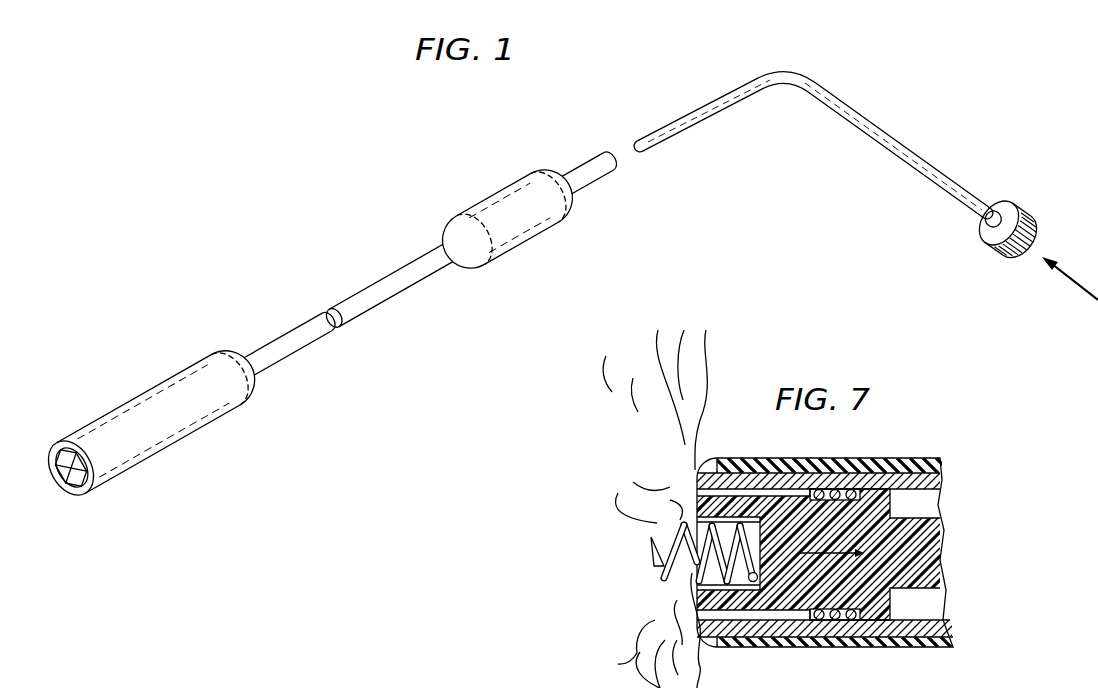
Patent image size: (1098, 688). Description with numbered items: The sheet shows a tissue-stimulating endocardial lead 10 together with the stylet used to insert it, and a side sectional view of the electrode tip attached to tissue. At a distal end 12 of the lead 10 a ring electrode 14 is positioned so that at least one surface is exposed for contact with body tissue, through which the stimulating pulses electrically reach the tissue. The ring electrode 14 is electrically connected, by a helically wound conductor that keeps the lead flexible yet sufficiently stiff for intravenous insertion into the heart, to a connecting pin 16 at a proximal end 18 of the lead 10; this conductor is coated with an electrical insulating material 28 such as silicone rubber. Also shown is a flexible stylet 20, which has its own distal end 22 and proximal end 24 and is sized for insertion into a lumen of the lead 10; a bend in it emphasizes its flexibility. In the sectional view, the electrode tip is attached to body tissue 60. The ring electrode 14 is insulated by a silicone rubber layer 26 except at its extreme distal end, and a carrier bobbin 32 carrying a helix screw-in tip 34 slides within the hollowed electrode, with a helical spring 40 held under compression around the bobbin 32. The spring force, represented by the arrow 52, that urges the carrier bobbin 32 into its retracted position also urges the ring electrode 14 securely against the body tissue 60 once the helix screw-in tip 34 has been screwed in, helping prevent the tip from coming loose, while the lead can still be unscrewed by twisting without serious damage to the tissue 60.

In FIG. 1, the endocardial lead 10 is at (350, 262).
In FIG. 1, the distal end 12 is at (110, 366).
In FIG. 1, the ring electrode 14 is at (82, 491).
In FIG. 7, the ring electrode 14 is at (697, 482).
In FIG. 1, the connecting pin 16 is at (576, 168).
In FIG. 1, the proximal end 18 is at (497, 165).
In FIG. 1, the stylet 20 is at (907, 140).
In FIG. 1, the distal end 22 is at (703, 107).
In FIG. 1, the proximal end 24 is at (1012, 205).
In FIG. 1, the insulating silicone rubber layer 26 is at (190, 368).
In FIG. 7, the insulating silicone rubber layer 26 is at (803, 460).
In FIG. 1, the electrical insulating material 28 is at (292, 356).
In FIG. 7, the carrier bobbin 32 is at (933, 545).
In FIG. 7, the helix screw-in tip 34 is at (662, 577).
In FIG. 7, the helical spring 40 is at (828, 617).
In FIG. 7, the arrow 52 is at (832, 565).
In FIG. 7, the body tissue 60 is at (693, 438).